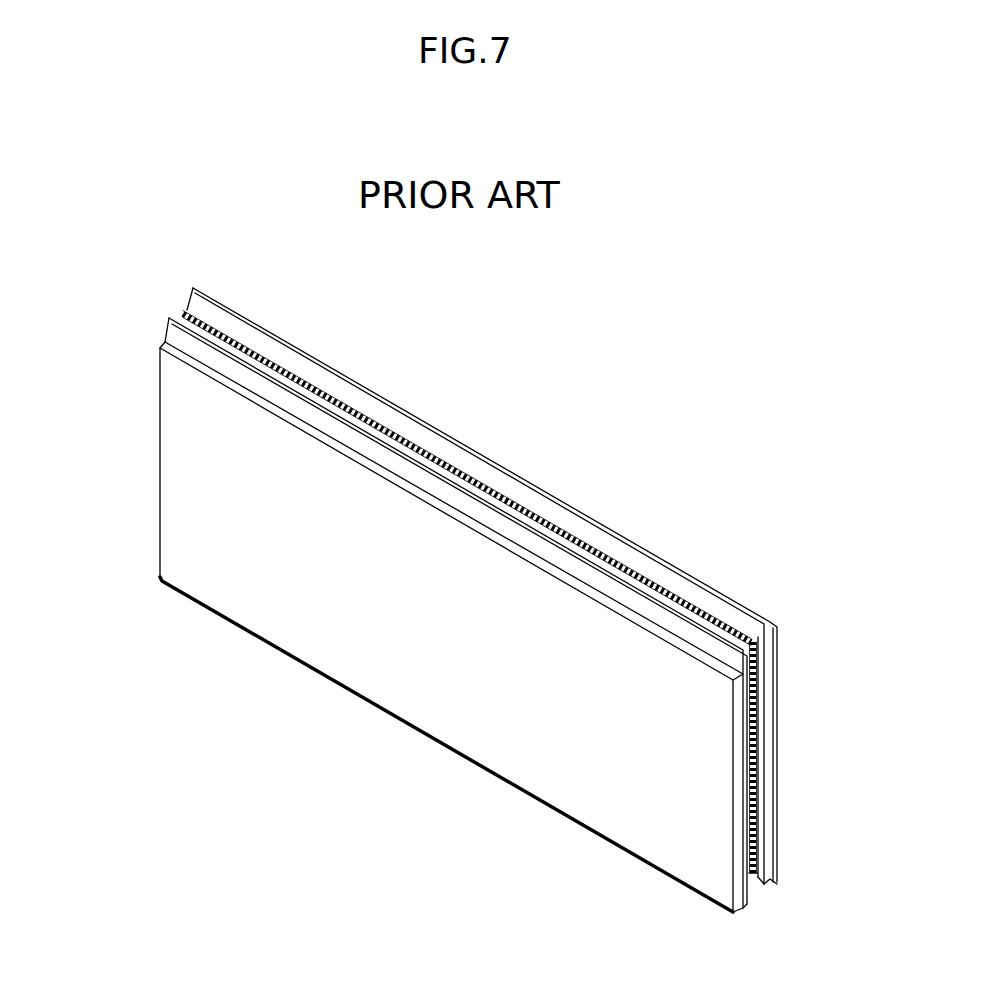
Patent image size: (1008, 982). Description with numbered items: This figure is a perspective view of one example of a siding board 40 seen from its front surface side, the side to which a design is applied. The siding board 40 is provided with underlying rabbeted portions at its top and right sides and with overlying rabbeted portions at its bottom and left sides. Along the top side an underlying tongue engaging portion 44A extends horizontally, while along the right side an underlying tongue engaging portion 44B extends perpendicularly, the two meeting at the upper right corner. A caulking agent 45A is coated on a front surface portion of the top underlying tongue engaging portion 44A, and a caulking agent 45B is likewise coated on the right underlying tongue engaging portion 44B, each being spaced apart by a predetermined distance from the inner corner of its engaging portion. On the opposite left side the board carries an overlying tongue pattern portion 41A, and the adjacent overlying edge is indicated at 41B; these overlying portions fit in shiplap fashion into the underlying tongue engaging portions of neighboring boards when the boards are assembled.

The siding board 40 is at (783, 463).
The overlying tongue pattern portion 41A is at (533, 793).
The front panel (side edge) 41B is at (160, 488).
The underlying tongue engaging portion 44A is at (470, 455).
The underlying tongue engaging portion 44B is at (768, 743).
The caulking agent 45A is at (335, 400).
The caulking agent 45B is at (755, 842).